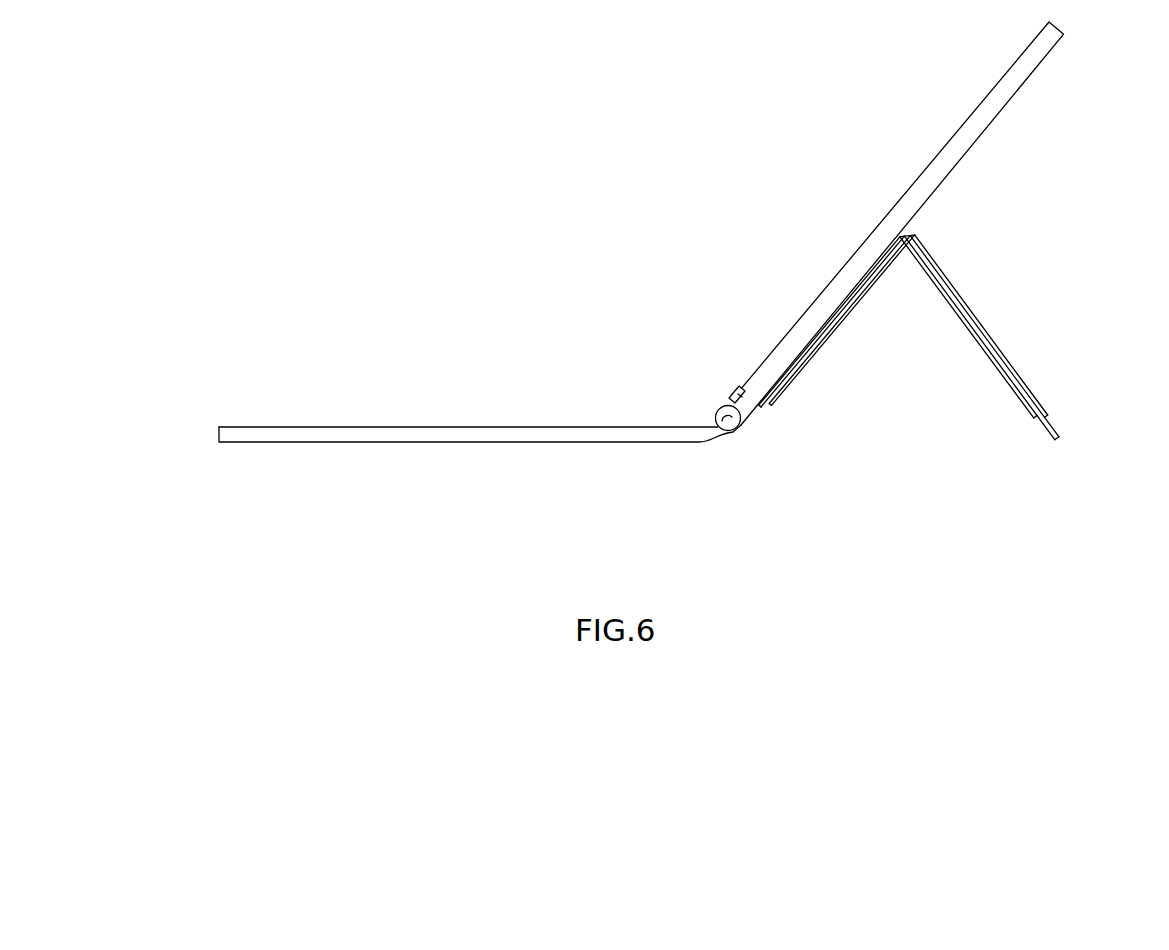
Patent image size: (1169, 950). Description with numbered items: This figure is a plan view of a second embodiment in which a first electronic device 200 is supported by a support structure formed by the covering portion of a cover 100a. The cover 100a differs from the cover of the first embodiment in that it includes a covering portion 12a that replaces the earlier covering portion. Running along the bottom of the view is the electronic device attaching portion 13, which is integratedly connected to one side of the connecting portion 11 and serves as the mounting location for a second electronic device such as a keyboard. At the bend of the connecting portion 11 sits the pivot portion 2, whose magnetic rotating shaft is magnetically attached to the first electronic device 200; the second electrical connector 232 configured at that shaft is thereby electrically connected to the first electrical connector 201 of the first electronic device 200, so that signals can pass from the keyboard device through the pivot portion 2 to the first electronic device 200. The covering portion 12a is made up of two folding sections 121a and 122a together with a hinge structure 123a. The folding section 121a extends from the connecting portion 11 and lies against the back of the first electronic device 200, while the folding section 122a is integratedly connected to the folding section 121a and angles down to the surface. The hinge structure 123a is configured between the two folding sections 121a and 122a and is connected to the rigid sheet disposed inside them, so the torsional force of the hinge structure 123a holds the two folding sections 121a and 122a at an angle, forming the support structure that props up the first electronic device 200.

The cover 100a is at (488, 420).
The electronic device attaching portion 13 is at (311, 432).
The connecting portion 11 is at (730, 452).
The first electronic device 200 is at (960, 128).
The pivot portion 2 is at (681, 400).
The first electrical connector 201 is at (738, 398).
The second electrical connector 232 is at (730, 421).
The covering portion 12a is at (952, 328).
The folding section 121a is at (828, 360).
The hinge structure 123a is at (908, 238).
The folding section 122a is at (1010, 334).